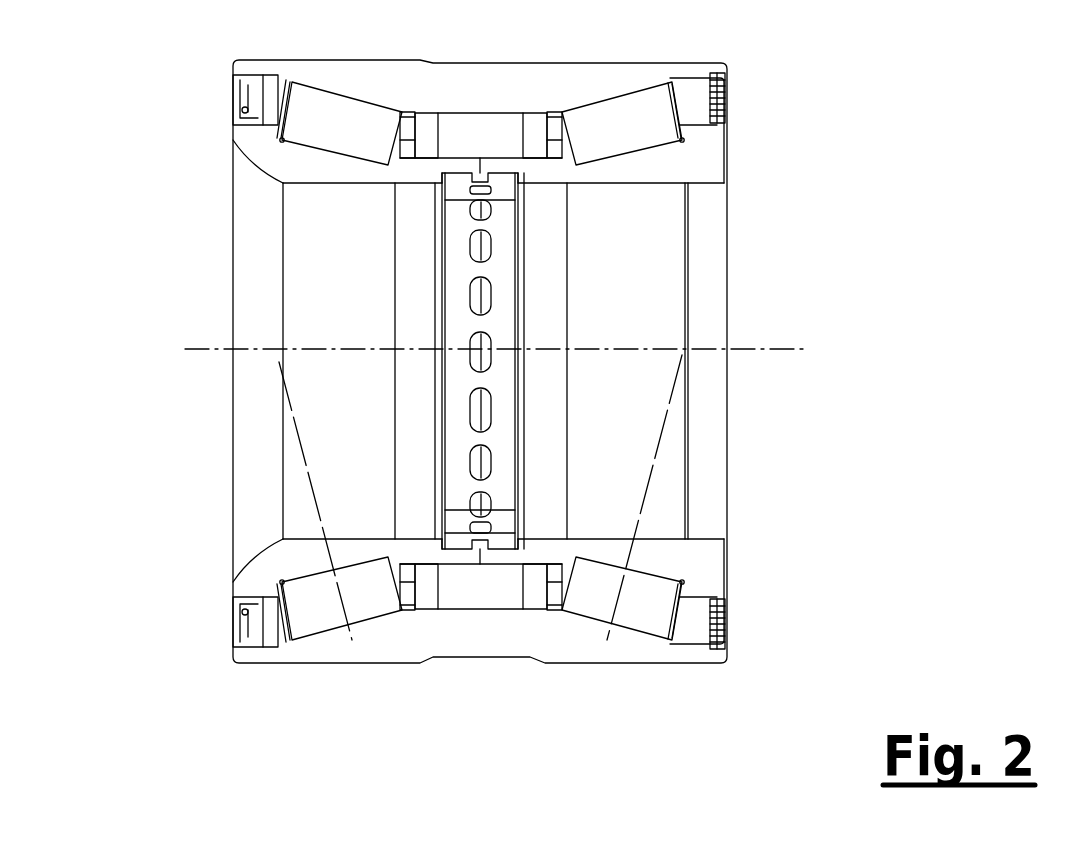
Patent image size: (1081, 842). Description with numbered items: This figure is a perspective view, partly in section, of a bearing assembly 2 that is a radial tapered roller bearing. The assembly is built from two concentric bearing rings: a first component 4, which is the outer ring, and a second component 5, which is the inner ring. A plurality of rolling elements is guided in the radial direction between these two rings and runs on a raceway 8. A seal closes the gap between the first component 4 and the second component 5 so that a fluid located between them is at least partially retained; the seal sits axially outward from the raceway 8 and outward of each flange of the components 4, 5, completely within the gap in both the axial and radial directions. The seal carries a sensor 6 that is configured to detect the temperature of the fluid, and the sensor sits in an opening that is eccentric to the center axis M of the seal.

The bearing assembly 2 is at (788, 52).
The first component 4 is at (682, 72).
The second component 5 is at (710, 163).
The sensor 6 is at (687, 95).
The raceway 8 is at (632, 150).
The center axis M is at (793, 349).